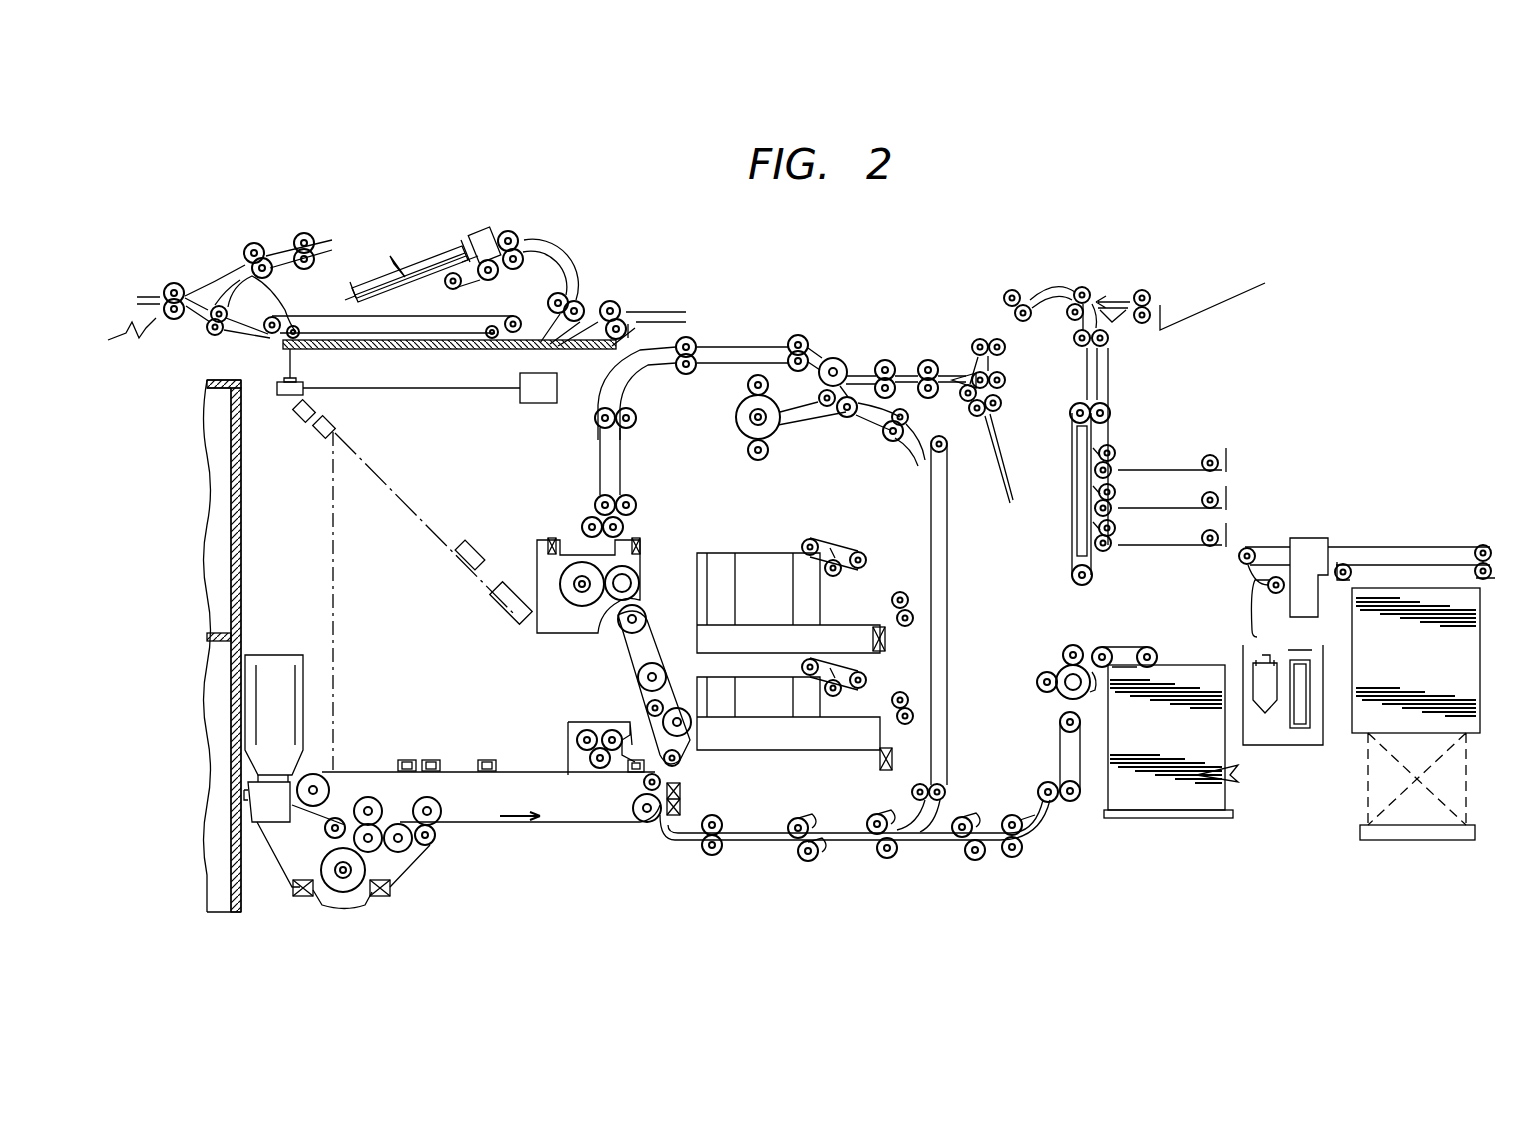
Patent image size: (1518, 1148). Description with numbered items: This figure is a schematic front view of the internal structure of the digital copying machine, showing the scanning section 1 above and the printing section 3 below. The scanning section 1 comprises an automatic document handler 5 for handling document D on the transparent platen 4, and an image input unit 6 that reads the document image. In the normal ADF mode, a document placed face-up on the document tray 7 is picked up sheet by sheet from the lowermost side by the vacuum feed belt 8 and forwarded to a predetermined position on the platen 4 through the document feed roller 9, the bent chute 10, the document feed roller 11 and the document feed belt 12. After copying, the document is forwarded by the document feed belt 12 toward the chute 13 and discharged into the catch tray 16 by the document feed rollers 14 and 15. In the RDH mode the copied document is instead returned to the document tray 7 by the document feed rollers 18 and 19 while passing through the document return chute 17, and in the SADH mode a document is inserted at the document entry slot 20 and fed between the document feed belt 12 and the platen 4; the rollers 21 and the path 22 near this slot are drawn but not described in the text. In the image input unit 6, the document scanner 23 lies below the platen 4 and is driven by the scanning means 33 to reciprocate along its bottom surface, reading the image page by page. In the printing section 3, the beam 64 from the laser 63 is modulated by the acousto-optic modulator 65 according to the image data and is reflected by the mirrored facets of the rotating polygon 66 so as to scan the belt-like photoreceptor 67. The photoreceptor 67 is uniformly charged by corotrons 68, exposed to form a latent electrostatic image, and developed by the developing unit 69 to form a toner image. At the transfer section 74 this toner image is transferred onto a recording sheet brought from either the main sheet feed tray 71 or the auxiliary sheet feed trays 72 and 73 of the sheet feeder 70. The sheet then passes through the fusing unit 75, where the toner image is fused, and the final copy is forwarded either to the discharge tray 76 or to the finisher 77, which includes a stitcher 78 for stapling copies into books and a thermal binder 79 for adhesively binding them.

The scanning section 1 is at (382, 212).
The printing section 3 is at (412, 618).
The transparent platen 4 is at (430, 350).
The automatic document handler 5 is at (426, 248).
The image input unit 6 is at (390, 383).
The document tray 7 is at (366, 298).
The vacuum feed belt 8 is at (495, 281).
The document feed roller 9 is at (515, 240).
The bent chute 10 is at (550, 242).
The document feed roller 11 is at (580, 298).
The document feed belt 12 is at (418, 311).
The chute 13 is at (210, 322).
The document feed roller 14 is at (215, 336).
The document feed roller 15 is at (174, 283).
The catch tray 16 is at (160, 316).
The document return chute 17 is at (246, 292).
The document feed roller 18 is at (254, 243).
The document feed roller 19 is at (303, 232).
The document entry slot 20 is at (640, 311).
The discharge rollers 21 is at (616, 300).
The document path 22 is at (593, 350).
The document scanner 23 is at (281, 379).
The scanning means 33 is at (543, 404).
The laser 63 is at (510, 620).
The beam 64 is at (426, 505).
The acousto-optic modulator 65 is at (480, 551).
The rotating polygon 66 is at (340, 412).
The belt-like photoreceptor 67 is at (525, 770).
The corotrons 68 is at (484, 762).
The developing unit 69 is at (424, 860).
The sheet feeder 70 is at (1010, 731).
The main sheet feed tray 71 is at (1160, 818).
The auxiliary sheet feed tray 72 is at (765, 555).
The auxiliary sheet feed tray 73 is at (770, 752).
The transfer section 74 is at (650, 838).
The fusing unit 75 is at (658, 580).
The discharge tray 76 is at (1232, 298).
The finisher 77 is at (1292, 467).
The stitcher 78 is at (1226, 482).
The thermal binder 79 is at (1407, 542).